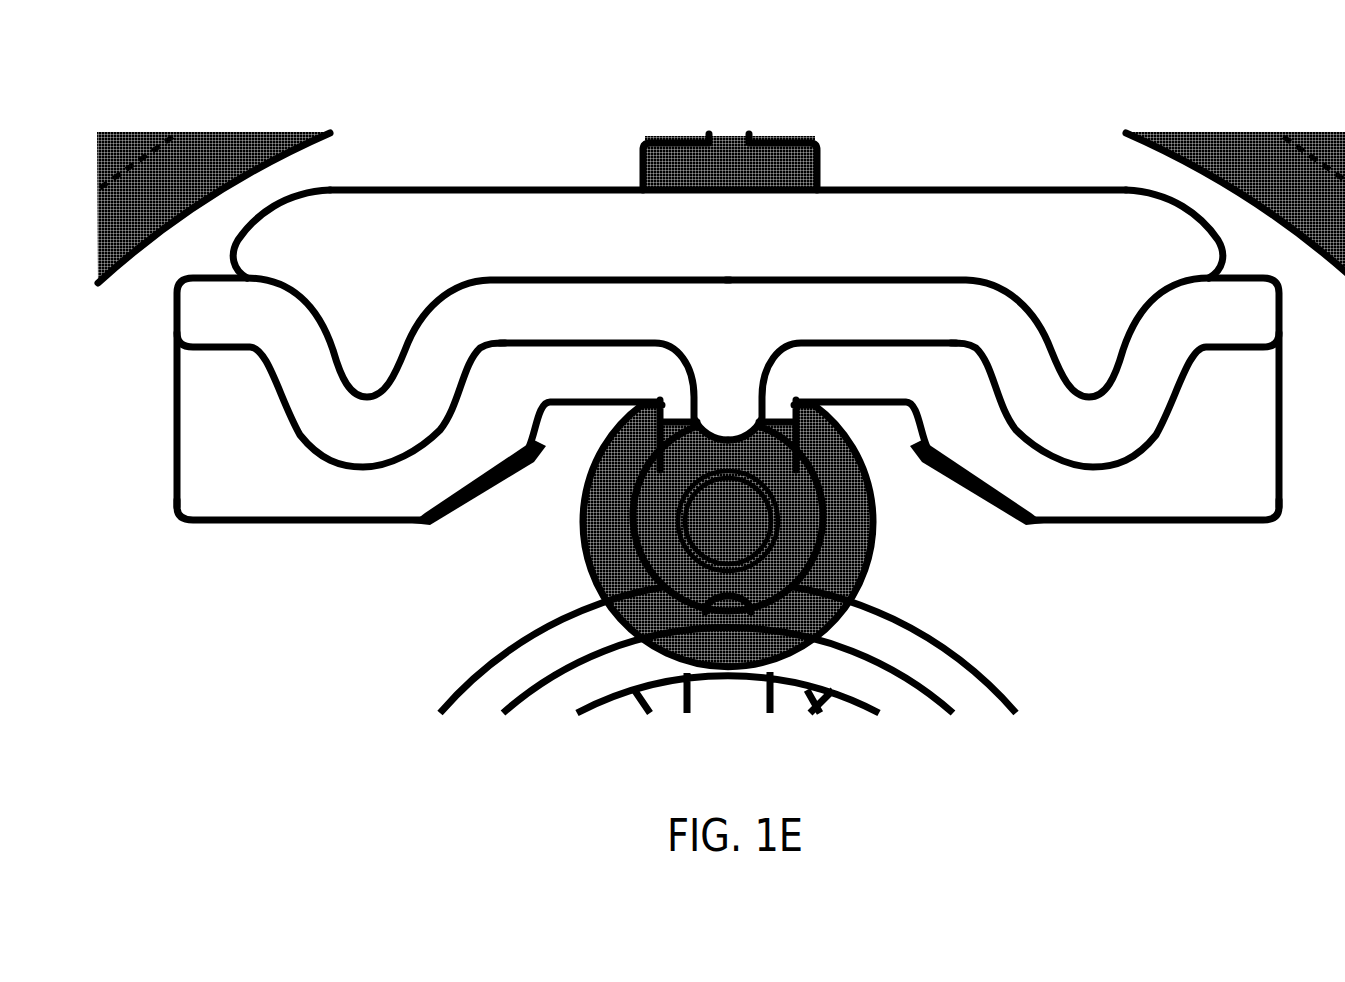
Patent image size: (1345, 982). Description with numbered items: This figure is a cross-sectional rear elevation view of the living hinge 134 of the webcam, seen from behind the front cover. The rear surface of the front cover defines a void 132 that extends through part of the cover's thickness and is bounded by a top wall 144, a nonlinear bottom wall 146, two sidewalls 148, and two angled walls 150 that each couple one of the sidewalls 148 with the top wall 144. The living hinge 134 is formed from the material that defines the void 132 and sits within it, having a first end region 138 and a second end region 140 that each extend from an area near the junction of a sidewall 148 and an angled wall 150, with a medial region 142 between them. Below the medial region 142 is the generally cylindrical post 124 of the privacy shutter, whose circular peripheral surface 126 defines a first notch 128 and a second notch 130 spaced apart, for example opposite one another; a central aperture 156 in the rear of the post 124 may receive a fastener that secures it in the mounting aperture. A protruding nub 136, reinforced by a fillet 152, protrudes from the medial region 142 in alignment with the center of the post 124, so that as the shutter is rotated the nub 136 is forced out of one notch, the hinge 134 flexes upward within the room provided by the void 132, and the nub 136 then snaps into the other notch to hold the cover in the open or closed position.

The post 124 is at (793, 503).
The peripheral surface 126 is at (645, 560).
The first notch 128 is at (726, 607).
The second notch 130 is at (730, 440).
The void 132 is at (1032, 236).
The living hinge 134 is at (468, 220).
The protruding nub 136 is at (733, 397).
The first end region 138 is at (372, 316).
The second end region 140 is at (1085, 310).
The medial region 142 is at (733, 224).
The top wall 144 is at (512, 190).
The nonlinear bottom wall 146 is at (260, 524).
The sidewalls 148 is at (175, 418).
The angled walls 150 is at (1187, 205).
The fillet 152 is at (677, 370).
The central aperture 156 is at (738, 517).